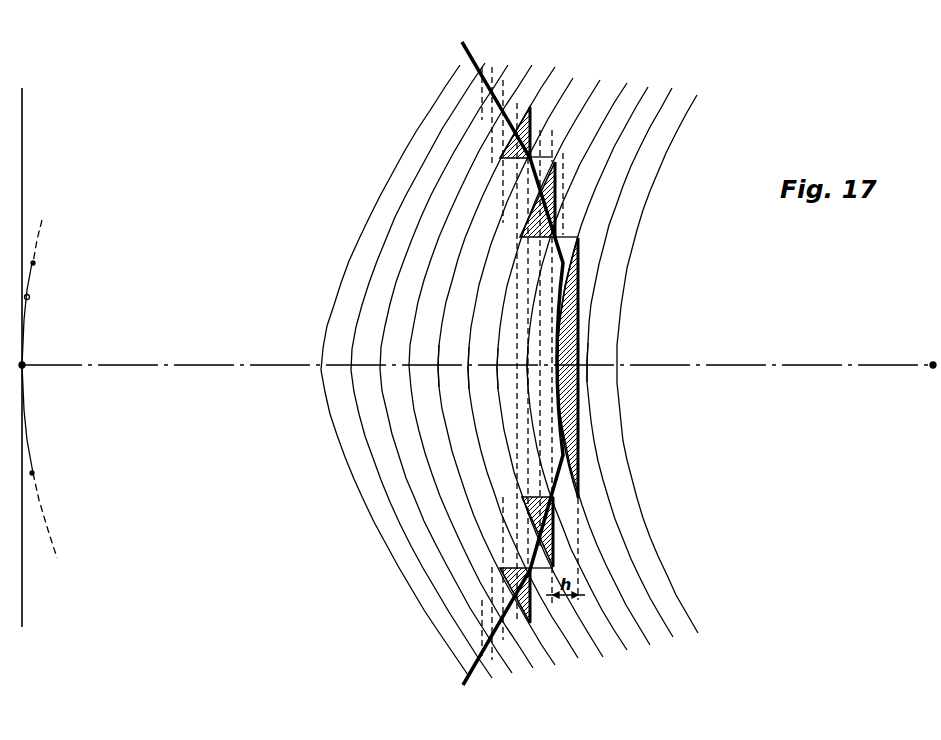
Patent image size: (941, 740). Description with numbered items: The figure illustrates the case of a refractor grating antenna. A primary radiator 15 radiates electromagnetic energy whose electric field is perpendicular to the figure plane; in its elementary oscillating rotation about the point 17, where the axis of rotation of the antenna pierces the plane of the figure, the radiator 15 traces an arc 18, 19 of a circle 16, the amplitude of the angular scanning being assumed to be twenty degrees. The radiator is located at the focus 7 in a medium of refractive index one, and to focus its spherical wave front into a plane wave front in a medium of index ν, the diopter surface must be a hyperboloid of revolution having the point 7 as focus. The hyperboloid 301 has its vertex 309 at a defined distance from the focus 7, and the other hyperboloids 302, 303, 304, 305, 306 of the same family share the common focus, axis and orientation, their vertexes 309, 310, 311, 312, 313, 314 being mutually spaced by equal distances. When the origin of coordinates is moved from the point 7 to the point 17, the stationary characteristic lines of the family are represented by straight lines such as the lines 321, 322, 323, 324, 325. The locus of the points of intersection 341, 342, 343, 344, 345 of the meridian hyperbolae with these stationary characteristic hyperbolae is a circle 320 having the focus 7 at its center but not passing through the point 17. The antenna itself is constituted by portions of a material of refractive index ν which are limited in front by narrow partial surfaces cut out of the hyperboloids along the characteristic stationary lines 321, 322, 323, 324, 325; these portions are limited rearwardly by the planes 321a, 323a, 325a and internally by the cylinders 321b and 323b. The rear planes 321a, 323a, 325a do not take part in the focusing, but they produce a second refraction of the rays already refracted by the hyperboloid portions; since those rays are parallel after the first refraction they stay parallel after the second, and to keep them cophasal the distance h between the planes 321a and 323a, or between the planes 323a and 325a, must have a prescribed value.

The focus 7 is at (26, 363).
The primary radiator 15 is at (30, 298).
The circle 16 is at (50, 542).
The axis of rotation point 17 is at (933, 365).
The arc end point 18 is at (35, 263).
The arc end point 19 is at (34, 473).
The hyperboloid 301 is at (548, 80).
The hyperboloid 302 is at (569, 86).
The hyperboloid 303 is at (584, 110).
The hyperboloid 304 is at (598, 134).
The hyperboloid 305 is at (612, 158).
The hyperboloid 306 is at (628, 179).
The vertex 309 is at (437, 370).
The vertex 310 is at (467, 370).
The vertex 311 is at (496, 370).
The vertex 312 is at (526, 370).
The vertex 313 is at (555, 370).
The vertex 314 is at (588, 370).
The circle 320 is at (470, 58).
The characteristic stationary line 321 is at (517, 232).
The rear plane 321a is at (533, 605).
The cylinder 321b is at (500, 567).
The characteristic stationary line 322 is at (527, 267).
The characteristic stationary line 323 is at (538, 290).
The rear plane 323a is at (557, 547).
The cylinder 323b is at (533, 492).
The characteristic stationary line 324 is at (550, 317).
The characteristic stationary line 325 is at (566, 218).
The rear plane 325a is at (582, 452).
The intersection point 341 is at (513, 136).
The intersection point 342 is at (553, 147).
The intersection point 343 is at (537, 200).
The intersection point 344 is at (554, 234).
The intersection point 345 is at (563, 293).